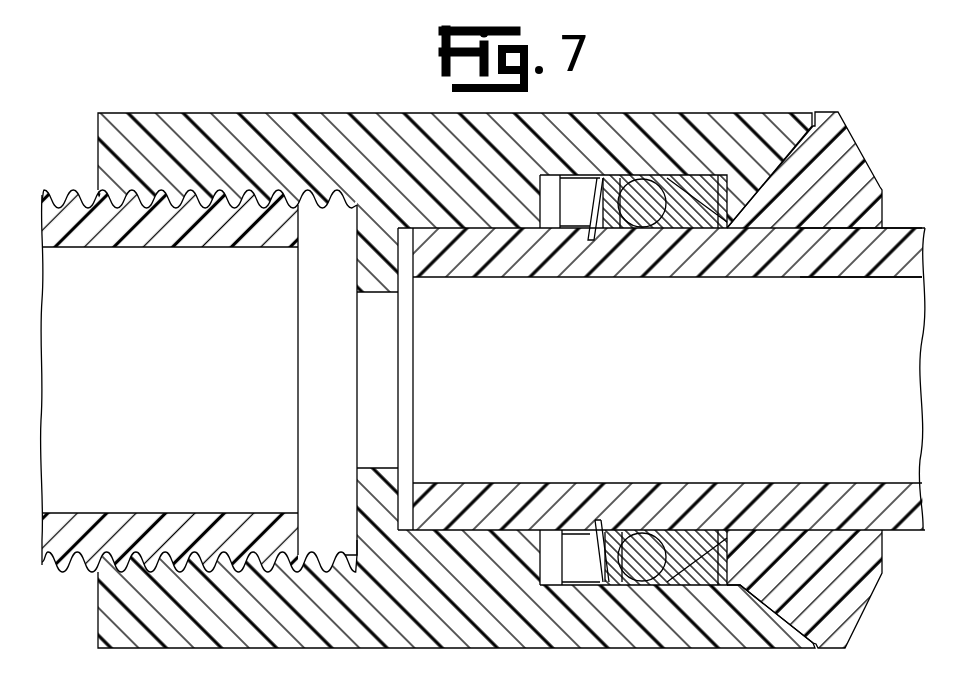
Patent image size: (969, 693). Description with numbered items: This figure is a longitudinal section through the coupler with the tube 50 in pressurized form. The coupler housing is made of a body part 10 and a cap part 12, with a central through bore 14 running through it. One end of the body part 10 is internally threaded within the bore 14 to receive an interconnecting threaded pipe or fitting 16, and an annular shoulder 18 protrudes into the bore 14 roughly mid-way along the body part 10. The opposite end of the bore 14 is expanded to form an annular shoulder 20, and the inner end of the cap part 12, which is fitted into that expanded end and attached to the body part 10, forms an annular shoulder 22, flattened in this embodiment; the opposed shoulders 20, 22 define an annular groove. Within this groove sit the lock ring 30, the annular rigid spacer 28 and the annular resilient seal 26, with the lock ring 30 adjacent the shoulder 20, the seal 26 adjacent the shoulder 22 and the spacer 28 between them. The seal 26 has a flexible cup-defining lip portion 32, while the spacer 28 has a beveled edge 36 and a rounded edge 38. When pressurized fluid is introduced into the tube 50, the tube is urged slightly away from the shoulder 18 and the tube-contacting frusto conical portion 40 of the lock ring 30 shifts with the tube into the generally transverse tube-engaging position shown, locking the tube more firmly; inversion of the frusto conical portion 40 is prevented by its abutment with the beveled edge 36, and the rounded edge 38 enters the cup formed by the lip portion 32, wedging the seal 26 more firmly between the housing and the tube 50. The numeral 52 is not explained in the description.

The body part 10 is at (652, 112).
The cap part 12 is at (843, 120).
The central through bore 14 is at (312, 382).
The interconnecting threaded pipe or fitting 16 is at (72, 189).
The annular shoulder 18 is at (362, 500).
The annular shoulder 20 is at (540, 240).
The beveled annular shoulder 22 is at (735, 560).
The annular resilient seal 26 is at (700, 557).
The annular rigid spacer 28 is at (632, 547).
The lock ring 30 is at (586, 530).
The lip portion 32 is at (632, 176).
The flattened edge 36 is at (612, 240).
The rounded edge 38 is at (670, 240).
The frusto conical portion 40 is at (592, 212).
The tube 50 is at (860, 268).
The sleeve lip 52 is at (413, 258).